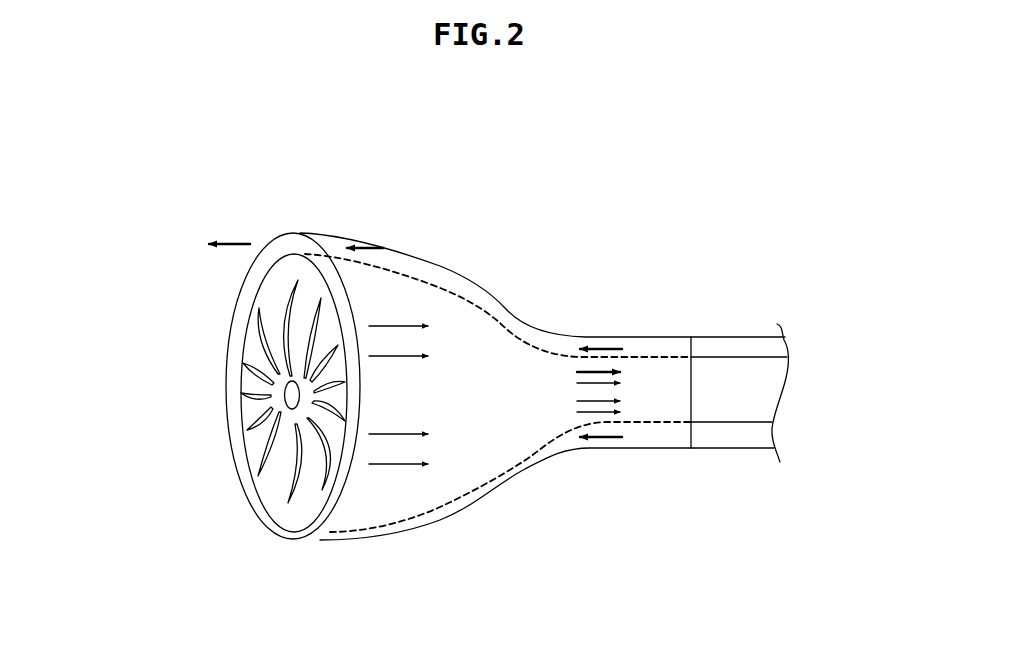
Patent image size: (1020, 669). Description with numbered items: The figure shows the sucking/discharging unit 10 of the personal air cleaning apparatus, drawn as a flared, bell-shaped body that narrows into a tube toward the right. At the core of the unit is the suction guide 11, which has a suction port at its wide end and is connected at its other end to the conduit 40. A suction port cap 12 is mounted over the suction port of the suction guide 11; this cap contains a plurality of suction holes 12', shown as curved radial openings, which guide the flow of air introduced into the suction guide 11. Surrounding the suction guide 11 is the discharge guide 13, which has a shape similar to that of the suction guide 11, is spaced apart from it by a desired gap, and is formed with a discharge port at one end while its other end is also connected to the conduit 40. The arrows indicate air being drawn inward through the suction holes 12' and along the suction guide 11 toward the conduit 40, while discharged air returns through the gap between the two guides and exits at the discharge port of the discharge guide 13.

The sucking/discharging unit 10 is at (463, 260).
The suction guide 11 is at (511, 342).
The suction port cap 12 is at (256, 393).
The suction holes 12' is at (258, 391).
The discharge guide 13 is at (373, 240).
The conduit 40 is at (725, 323).